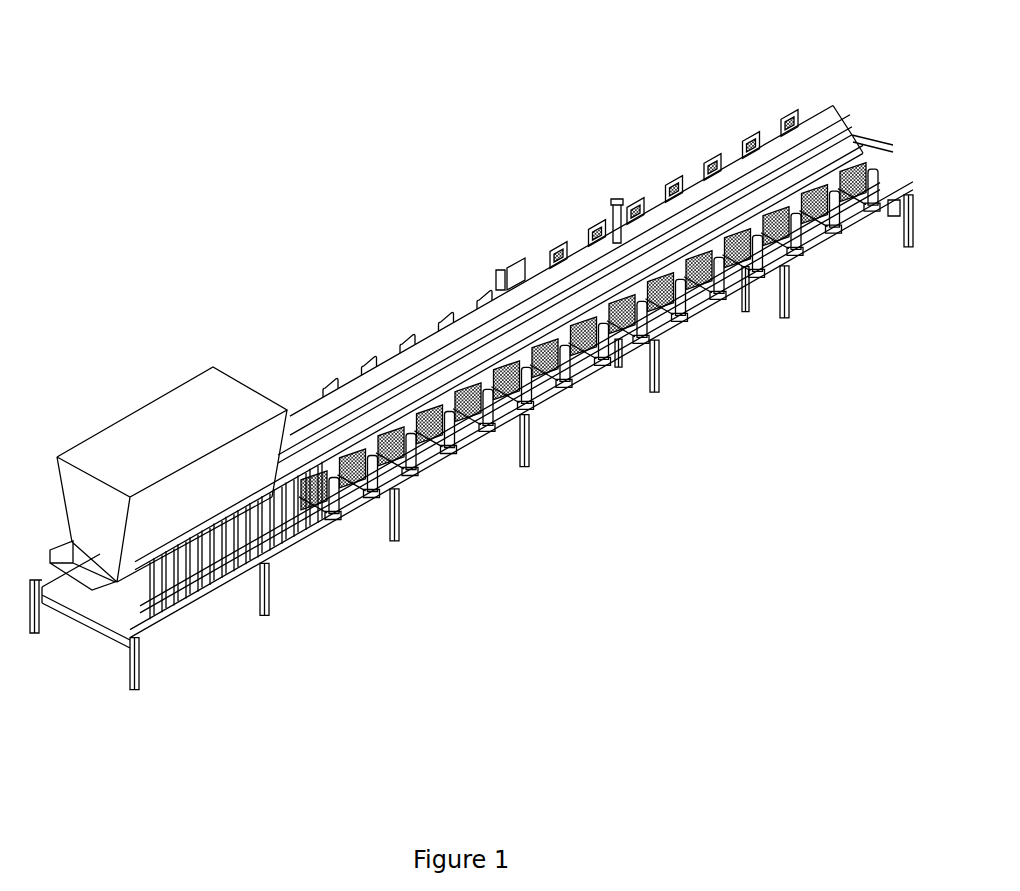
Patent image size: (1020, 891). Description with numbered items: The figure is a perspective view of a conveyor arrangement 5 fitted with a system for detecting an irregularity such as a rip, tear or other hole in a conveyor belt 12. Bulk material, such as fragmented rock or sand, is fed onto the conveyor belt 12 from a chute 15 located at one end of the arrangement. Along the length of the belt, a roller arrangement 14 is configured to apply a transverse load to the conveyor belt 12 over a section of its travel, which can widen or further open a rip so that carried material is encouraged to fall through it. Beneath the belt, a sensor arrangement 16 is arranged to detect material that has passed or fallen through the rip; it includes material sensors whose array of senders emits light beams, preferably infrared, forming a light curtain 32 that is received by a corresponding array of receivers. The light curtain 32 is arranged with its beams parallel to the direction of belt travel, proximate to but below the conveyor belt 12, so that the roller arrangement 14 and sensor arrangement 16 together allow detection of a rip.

The conveyor arrangement 5 is at (471, 361).
The conveyor belt 12 is at (625, 250).
The roller arrangement 14 is at (571, 203).
The chute 15 is at (156, 430).
The sensor arrangement 16 is at (307, 513).
The light curtain 32 is at (487, 430).